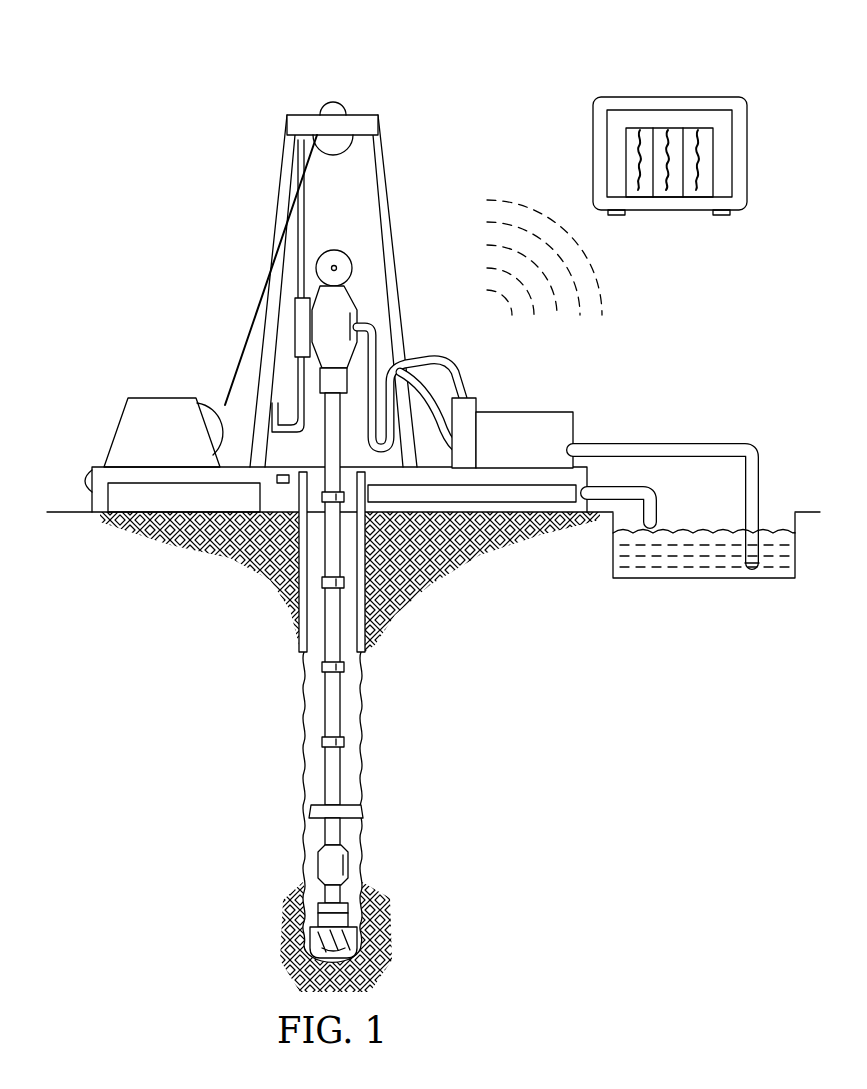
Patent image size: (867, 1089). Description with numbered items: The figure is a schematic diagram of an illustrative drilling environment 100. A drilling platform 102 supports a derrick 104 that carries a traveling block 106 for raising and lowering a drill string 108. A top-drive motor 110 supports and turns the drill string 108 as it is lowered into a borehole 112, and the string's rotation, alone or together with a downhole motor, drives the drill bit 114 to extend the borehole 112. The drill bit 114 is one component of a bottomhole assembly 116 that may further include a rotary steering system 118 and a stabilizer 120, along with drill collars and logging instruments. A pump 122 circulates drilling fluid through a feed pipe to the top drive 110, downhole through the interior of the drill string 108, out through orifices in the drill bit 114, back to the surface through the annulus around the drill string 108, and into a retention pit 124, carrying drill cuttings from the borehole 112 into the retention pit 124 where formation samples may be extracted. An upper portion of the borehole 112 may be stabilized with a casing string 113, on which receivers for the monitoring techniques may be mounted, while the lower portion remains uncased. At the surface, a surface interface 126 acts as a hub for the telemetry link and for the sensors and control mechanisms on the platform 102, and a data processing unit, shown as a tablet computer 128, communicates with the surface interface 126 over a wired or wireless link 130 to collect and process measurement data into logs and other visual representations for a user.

The drilling environment 100 is at (188, 88).
The drilling platform 102 is at (93, 478).
The derrick 104 is at (282, 169).
The traveling block 106 is at (316, 269).
The drill string 108 is at (325, 613).
The top-drive motor 110 is at (322, 325).
The borehole 112 is at (303, 565).
The casing string 113 is at (299, 535).
The drill bit 114 is at (357, 935).
The bottomhole assembly 116 is at (325, 828).
The rotary steering system 118 is at (349, 862).
The stabilizer 120 is at (320, 806).
The pump 122 is at (573, 420).
The retention pit 124 is at (700, 565).
The surface interface 126 is at (477, 404).
The tablet computer 128 is at (676, 97).
The wired or wireless link 130 is at (518, 205).